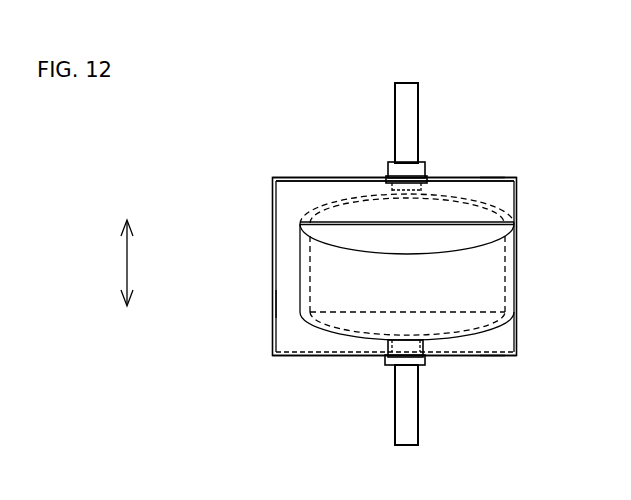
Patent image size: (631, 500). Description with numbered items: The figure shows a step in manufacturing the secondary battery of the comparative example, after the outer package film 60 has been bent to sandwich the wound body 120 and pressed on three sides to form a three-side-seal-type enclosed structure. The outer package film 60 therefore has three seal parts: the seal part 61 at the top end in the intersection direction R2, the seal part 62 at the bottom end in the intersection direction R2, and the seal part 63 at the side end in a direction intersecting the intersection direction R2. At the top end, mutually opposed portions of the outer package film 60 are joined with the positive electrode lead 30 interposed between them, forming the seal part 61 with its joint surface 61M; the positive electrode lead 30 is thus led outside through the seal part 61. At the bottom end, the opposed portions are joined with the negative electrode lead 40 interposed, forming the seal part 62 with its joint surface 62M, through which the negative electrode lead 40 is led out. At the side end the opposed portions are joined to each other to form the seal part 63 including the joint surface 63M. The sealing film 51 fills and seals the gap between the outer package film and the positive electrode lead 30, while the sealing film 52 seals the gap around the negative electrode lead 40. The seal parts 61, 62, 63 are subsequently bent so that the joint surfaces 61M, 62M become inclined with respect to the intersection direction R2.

The positive electrode lead 30 is at (408, 107).
The negative electrode lead 40 is at (408, 423).
The sealing film 51 is at (386, 172).
The sealing film 52 is at (385, 366).
The outer package film 60 is at (510, 252).
The seal part 61 is at (530, 201).
The joint surface 61M is at (494, 176).
The seal part 62 is at (530, 331).
The joint surface 62M is at (494, 359).
The seal part 63 is at (258, 234).
The joint surface 63M is at (276, 304).
The wound body 120 is at (505, 296).
The intersection direction R2 is at (125, 262).